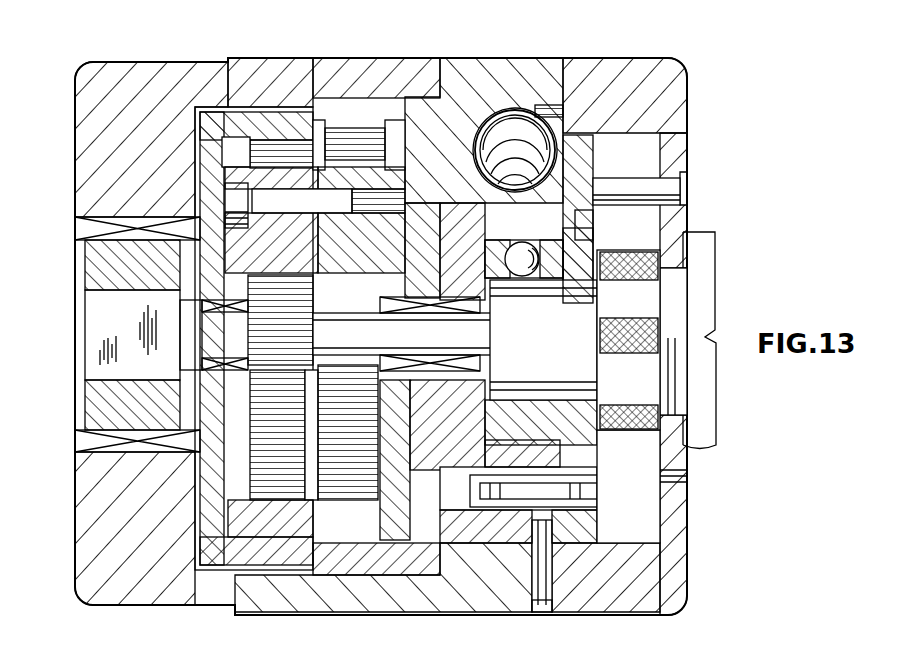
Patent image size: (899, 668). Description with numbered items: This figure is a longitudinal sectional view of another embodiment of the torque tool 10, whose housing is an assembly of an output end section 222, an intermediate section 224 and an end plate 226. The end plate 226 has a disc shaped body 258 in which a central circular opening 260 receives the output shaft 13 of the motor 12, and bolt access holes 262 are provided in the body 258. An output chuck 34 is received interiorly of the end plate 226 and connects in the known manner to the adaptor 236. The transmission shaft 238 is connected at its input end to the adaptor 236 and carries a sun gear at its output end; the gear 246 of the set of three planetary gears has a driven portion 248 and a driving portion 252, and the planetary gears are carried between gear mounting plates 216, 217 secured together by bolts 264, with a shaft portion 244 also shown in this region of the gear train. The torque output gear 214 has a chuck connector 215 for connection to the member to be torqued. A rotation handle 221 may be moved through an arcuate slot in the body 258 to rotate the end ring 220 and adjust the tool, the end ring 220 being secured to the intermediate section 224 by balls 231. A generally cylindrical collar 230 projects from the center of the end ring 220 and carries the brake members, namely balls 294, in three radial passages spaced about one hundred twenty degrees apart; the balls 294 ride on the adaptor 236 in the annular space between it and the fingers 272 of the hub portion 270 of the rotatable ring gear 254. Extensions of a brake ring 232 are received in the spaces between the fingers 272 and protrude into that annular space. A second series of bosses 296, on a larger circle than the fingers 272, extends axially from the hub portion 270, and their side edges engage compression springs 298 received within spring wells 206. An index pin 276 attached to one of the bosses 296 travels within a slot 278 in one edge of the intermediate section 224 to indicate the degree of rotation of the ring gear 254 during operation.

The torque tool 10 is at (68, 74).
The motor 12 is at (705, 405).
The output shaft 13 is at (678, 300).
The output chuck 34 is at (642, 395).
The spring wells 206 is at (551, 104).
The torque output gear 214 is at (76, 399).
The chuck connector 215 is at (98, 325).
The gear mounting plate 216 is at (278, 165).
The gear mounting plate 217 is at (378, 160).
The end ring 220 is at (598, 147).
The rotation handle 221 is at (680, 192).
The output end section 222 is at (124, 60).
The intermediate section 224 is at (462, 56).
The end plate 226 is at (618, 56).
The collar 230 is at (593, 238).
The balls 231 is at (608, 475).
The brake ring 232 is at (572, 221).
The adaptor 236 is at (560, 343).
The transmission shaft 238 is at (448, 345).
The planet carrier shaft 244 is at (290, 300).
The planetary gear 246 is at (290, 540).
The driven portion 248 is at (266, 515).
The driving portion 252 is at (360, 520).
The rotatable ring gear 254 is at (349, 86).
The disc shaped body 258 is at (398, 324).
The central circular opening 260 is at (675, 268).
The bolt access holes 262 is at (684, 506).
The bolts 264 is at (232, 195).
The hub portion 270 is at (462, 263).
The fingers 272 is at (520, 232).
The index pin 276 is at (542, 608).
The slot 278 is at (556, 605).
The balls 294 is at (516, 272).
The bosses 296 is at (480, 528).
The compression springs 298 is at (528, 108).